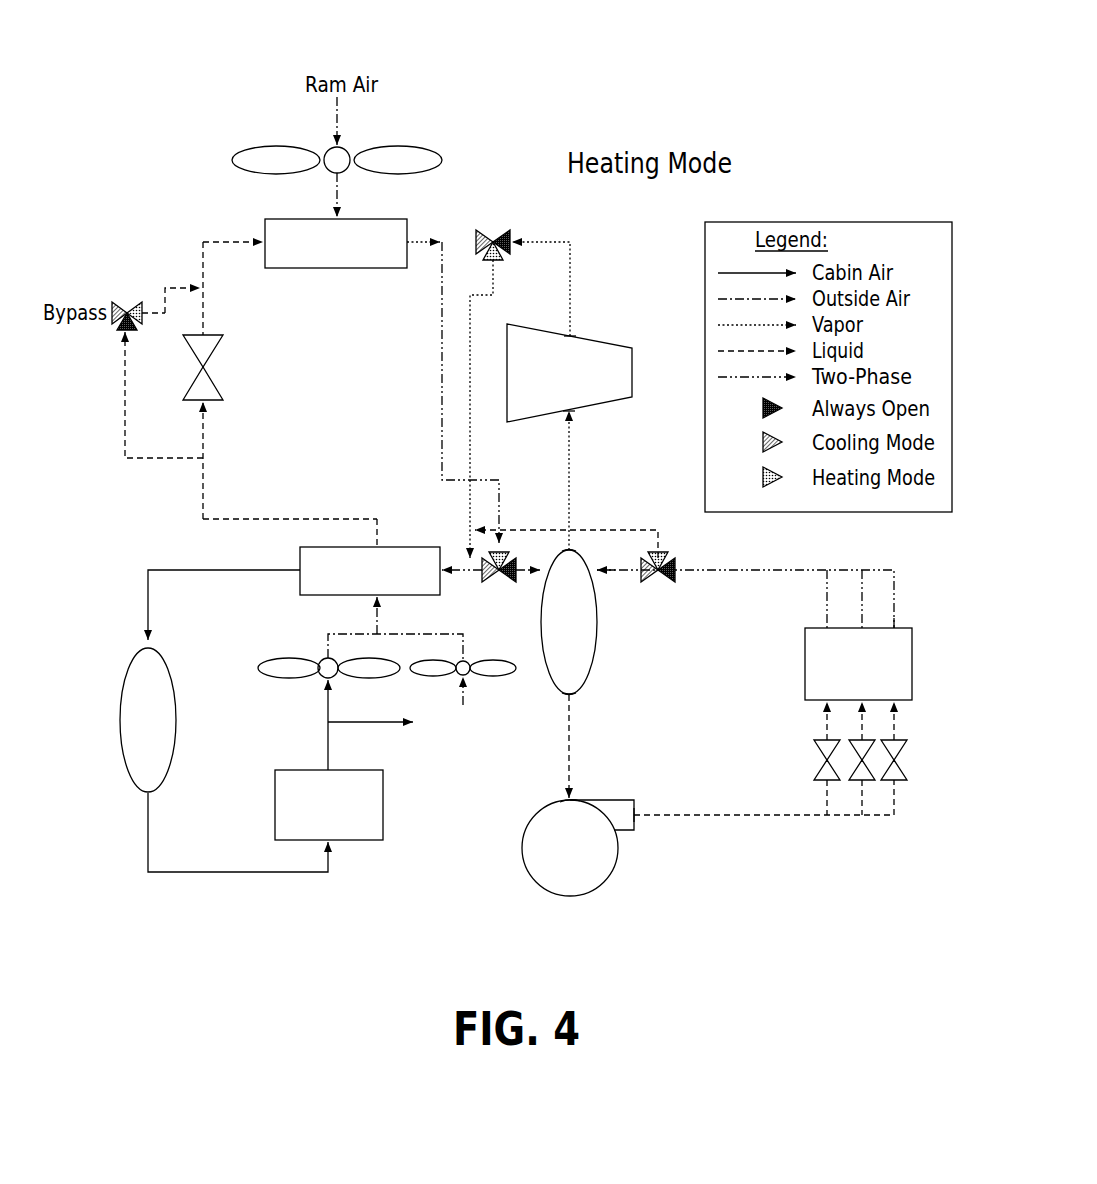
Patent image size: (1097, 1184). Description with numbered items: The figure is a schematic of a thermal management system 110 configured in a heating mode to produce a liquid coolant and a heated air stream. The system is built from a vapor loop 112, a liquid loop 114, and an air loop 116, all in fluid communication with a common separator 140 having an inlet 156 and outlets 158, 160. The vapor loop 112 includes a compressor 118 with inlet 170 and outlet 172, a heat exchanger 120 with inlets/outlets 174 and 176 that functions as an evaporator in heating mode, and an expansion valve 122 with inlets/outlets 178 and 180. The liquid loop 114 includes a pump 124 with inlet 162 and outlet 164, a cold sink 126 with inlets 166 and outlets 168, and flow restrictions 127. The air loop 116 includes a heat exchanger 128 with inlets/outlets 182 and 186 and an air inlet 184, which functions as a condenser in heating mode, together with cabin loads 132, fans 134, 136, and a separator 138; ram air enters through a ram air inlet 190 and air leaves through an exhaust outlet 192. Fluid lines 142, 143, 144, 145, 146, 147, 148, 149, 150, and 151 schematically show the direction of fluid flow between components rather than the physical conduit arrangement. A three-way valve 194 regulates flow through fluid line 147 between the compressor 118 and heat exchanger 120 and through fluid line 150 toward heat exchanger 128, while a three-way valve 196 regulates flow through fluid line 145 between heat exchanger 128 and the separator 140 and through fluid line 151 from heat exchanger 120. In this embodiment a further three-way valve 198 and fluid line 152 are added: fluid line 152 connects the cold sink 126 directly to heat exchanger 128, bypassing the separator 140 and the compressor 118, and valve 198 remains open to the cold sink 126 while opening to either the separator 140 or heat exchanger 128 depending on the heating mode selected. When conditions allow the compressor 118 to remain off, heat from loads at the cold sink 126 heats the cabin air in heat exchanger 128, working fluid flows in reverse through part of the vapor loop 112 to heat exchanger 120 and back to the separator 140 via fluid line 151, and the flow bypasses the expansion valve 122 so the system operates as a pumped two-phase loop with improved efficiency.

The system 110 is at (768, 85).
The vapor loop 112 is at (170, 172).
The liquid loop 114 is at (848, 880).
The air loop 116 is at (142, 900).
The compressor 118 is at (633, 380).
The heat exchanger 120 is at (337, 270).
The expansion valve 122 is at (188, 350).
The pump 124 is at (523, 850).
The cold sink 126 is at (913, 670).
The flow restrictions 127 is at (905, 768).
The heat exchanger 128 is at (395, 545).
The cabin loads 132 is at (273, 815).
The fan 134 is at (493, 680).
The fan 136 is at (283, 658).
The separator 138 is at (120, 735).
The separator 140 is at (598, 662).
The fluid line 142 is at (562, 772).
The fluid line 143 is at (737, 817).
The fluid line 144 is at (833, 568).
The fluid line 145 is at (518, 560).
The fluid line 146 is at (572, 475).
The fluid line 147 is at (571, 277).
The fluid line 148 is at (200, 278).
The fluid line 149 is at (240, 520).
The fluid line 150 is at (472, 380).
The fluid line 151 is at (440, 392).
The fluid line 152 is at (627, 530).
The separator inlet 156 is at (540, 578).
The separator outlet 158 is at (572, 548).
The separator outlet 160 is at (575, 698).
The pump inlet 162 is at (578, 800).
The pump outlet 164 is at (636, 800).
The cold sink inlets 166 is at (900, 700).
The cold sink outlets 168 is at (896, 627).
The compressor inlet 170 is at (567, 410).
The compressor outlet 172 is at (571, 335).
The heat exchanger inlet/outlet 174 is at (410, 240).
The heat exchanger inlet/outlet 176 is at (265, 240).
The expansion valve inlet/outlet 178 is at (205, 333).
The expansion valve inlet/outlet 180 is at (208, 403).
The heat exchanger inlet/outlet 182 is at (373, 545).
The air inlet 184 is at (375, 598).
The heat exchanger inlet/outlet 186 is at (443, 572).
The ram air inlet 190 is at (475, 740).
The exhaust outlet 192 is at (350, 722).
The valve 194 is at (493, 228).
The valve 196 is at (502, 548).
The valve 198 is at (665, 580).